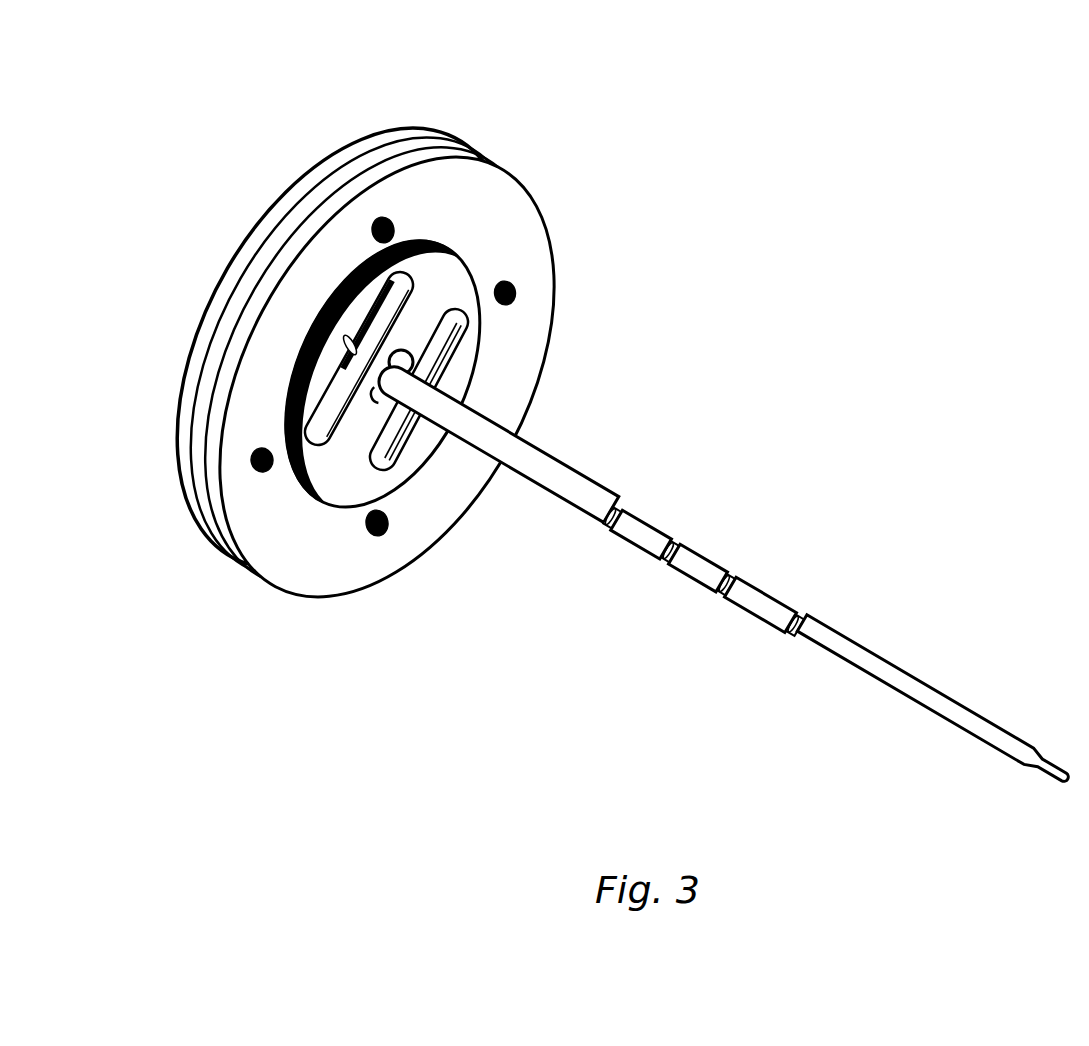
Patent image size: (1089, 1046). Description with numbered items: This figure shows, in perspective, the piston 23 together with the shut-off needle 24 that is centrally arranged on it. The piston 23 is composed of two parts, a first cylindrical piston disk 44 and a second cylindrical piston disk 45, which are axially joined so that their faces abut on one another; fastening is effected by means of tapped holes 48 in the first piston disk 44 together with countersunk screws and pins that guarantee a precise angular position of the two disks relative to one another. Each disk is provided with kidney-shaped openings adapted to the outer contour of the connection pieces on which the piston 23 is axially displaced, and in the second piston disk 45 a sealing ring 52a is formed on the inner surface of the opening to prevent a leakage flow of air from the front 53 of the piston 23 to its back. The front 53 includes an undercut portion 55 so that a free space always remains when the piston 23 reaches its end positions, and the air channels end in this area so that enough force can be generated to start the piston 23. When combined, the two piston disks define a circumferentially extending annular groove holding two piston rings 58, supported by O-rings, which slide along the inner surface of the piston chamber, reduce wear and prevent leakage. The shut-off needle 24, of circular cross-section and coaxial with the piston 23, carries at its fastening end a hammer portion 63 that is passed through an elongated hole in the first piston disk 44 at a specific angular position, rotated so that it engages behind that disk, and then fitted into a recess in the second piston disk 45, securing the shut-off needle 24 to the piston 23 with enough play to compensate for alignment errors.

The piston 23 is at (378, 392).
The shut-off needle 24 is at (778, 580).
The first cylindrical piston disk 44 is at (460, 135).
The second cylindrical piston disk 45 is at (325, 170).
The tapped holes 48 is at (518, 290).
The sealing ring 52a is at (412, 366).
The front 53 is at (343, 308).
The undercut portions 55 is at (325, 513).
The piston rings 58 is at (240, 345).
The hammer portion 63 is at (338, 305).